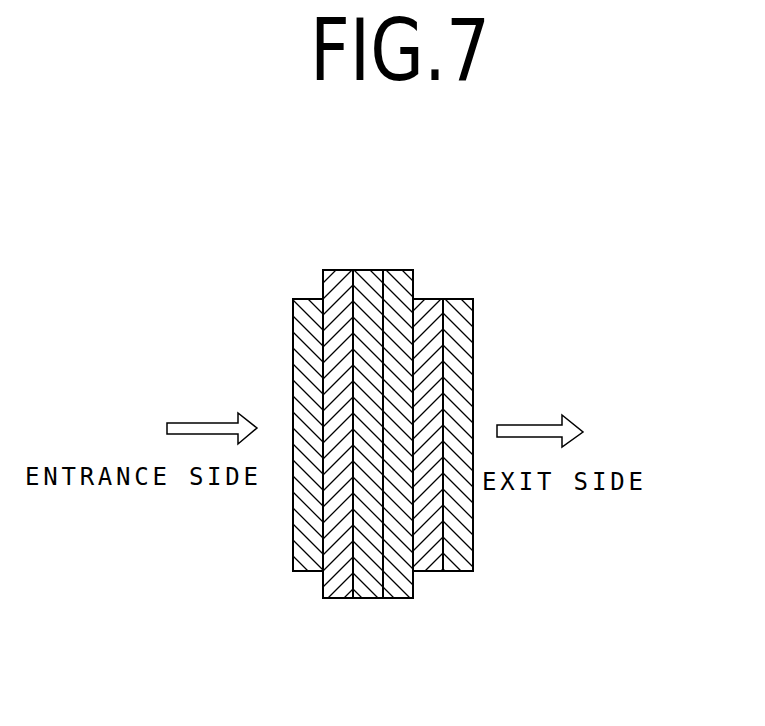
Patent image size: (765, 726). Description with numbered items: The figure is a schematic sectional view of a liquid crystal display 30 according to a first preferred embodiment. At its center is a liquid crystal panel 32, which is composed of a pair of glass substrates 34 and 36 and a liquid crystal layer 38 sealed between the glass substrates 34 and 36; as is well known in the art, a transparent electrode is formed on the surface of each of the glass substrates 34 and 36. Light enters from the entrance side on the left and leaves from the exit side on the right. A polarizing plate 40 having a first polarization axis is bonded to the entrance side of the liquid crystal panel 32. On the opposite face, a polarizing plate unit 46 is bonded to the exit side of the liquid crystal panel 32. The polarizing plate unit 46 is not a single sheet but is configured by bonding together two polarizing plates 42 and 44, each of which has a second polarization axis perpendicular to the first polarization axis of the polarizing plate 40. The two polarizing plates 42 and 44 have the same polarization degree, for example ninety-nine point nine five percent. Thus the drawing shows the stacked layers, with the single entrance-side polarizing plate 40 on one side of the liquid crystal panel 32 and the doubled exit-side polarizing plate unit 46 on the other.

The liquid crystal display 30 is at (417, 224).
The liquid crystal panel 32 is at (374, 266).
The glass substrate 34 is at (327, 600).
The glass substrate 36 is at (397, 598).
The liquid crystal layer 38 is at (363, 598).
The polarizing plate 40 is at (293, 563).
The polarizing plate 42 is at (423, 573).
The polarizing plate 44 is at (473, 570).
The polarizing plate unit 46 is at (478, 347).